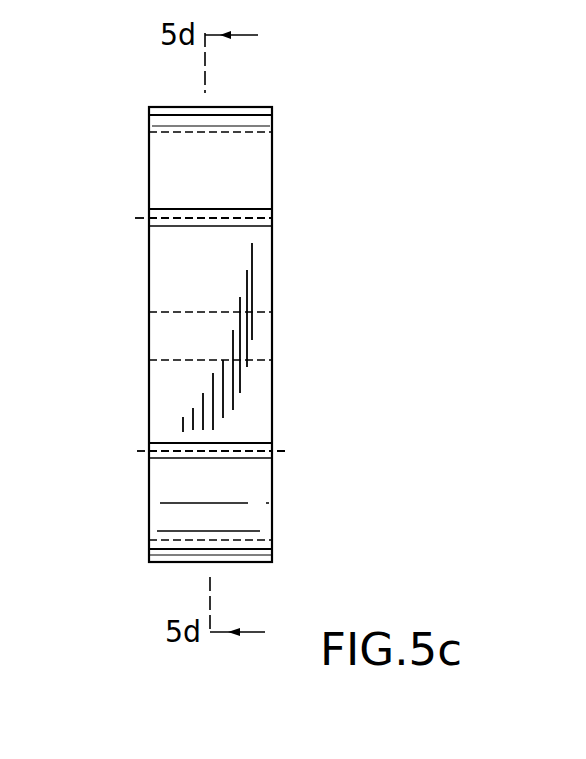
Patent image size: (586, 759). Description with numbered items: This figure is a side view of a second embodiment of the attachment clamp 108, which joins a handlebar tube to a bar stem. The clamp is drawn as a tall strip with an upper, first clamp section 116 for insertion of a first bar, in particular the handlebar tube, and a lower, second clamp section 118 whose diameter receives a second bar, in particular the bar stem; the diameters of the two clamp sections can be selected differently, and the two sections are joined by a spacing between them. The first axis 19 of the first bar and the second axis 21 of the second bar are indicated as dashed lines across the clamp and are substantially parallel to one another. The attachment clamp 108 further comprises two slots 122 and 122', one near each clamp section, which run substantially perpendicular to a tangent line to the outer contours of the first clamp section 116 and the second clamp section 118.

The attachment clamp 108 is at (312, 153).
The first clamp section 116 is at (272, 190).
The first axis 19 is at (277, 219).
The slot 122 is at (110, 205).
The second clamp section 118 is at (276, 479).
The second axis 21 is at (294, 449).
The slot 122' is at (108, 467).